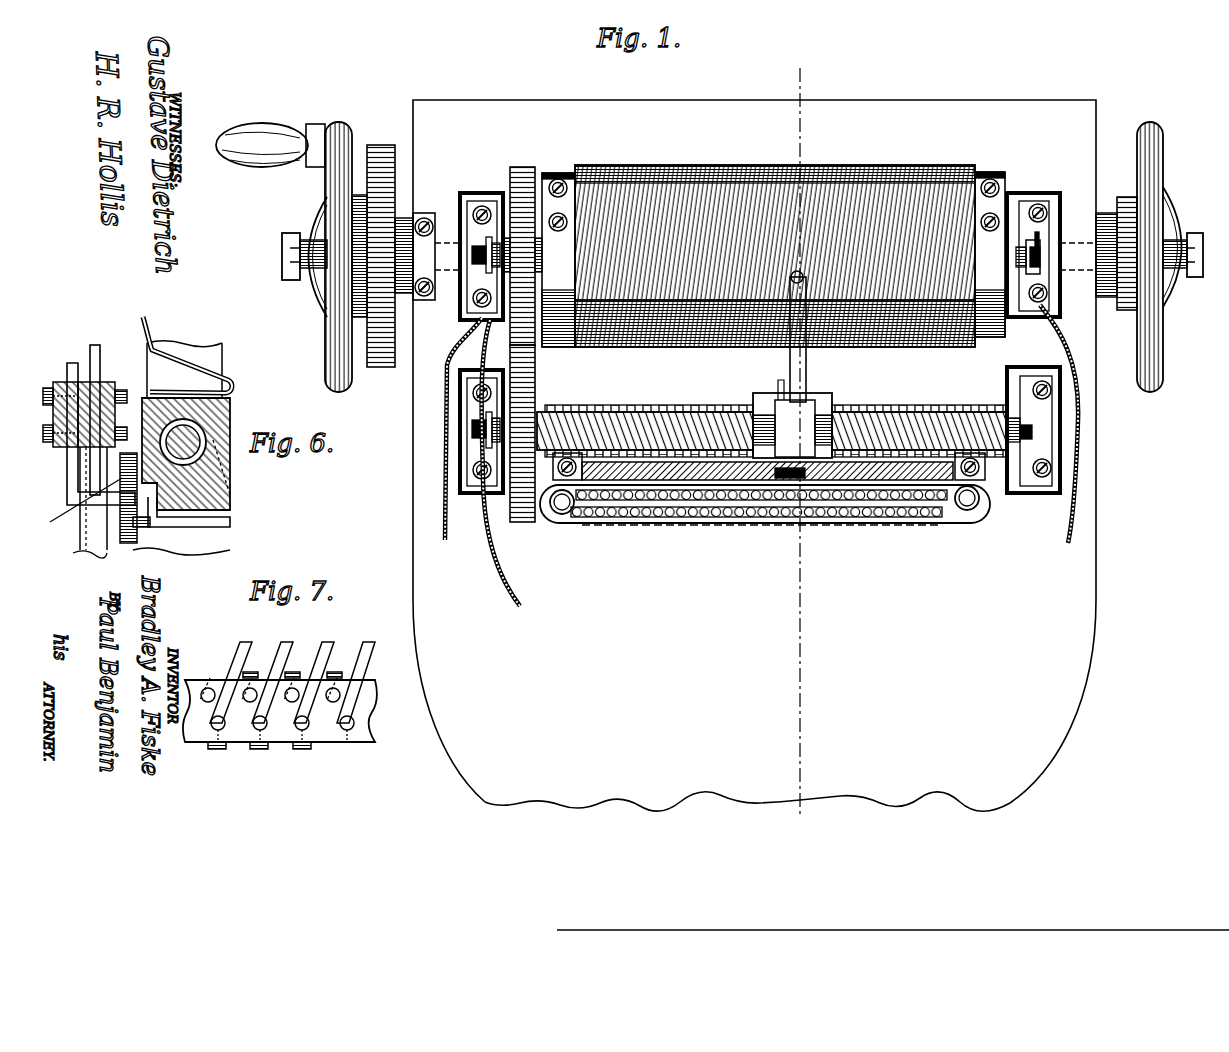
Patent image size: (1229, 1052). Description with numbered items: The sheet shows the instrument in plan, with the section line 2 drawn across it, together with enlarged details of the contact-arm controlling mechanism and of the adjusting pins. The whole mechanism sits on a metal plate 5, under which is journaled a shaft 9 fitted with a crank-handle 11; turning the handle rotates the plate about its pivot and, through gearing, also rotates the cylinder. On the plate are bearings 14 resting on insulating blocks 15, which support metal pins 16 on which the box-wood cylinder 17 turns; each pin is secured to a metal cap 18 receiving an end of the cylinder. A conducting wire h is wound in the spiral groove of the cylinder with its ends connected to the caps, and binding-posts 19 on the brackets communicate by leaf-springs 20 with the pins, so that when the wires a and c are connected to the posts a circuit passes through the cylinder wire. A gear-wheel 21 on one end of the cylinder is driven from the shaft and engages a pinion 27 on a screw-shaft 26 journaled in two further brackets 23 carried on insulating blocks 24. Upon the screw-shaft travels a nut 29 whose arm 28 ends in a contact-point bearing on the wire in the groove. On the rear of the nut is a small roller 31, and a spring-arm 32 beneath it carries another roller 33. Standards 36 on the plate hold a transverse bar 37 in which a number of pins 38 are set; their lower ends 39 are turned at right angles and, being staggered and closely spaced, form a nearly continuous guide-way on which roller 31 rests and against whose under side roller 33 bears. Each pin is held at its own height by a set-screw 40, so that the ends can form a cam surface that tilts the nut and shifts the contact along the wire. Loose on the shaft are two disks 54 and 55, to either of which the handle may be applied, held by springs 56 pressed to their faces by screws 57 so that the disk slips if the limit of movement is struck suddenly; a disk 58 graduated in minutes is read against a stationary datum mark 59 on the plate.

In FIG. 1, the section line 2 is at (803, 429).
In FIG. 1, the metal plate 5 is at (754, 455).
In FIG. 1, the shaft 9 is at (448, 243).
In FIG. 1, the crank-handle 11 is at (288, 130).
In FIG. 1, the bearings 14 is at (466, 192).
In FIG. 1, the insulating blocks 15 is at (488, 200).
In FIG. 1, the metal pins 16 is at (512, 250).
In FIG. 1, the box-wood cylinder 17 is at (775, 244).
In FIG. 1, the metal cap 18 is at (990, 350).
In FIG. 1, the binding-posts 19 is at (470, 290).
In FIG. 1, the leaf-springs 20 is at (1040, 238).
In FIG. 1, the gear-wheel 21 is at (535, 330).
In FIG. 1, the brackets 23 is at (474, 378).
In FIG. 1, the insulating blocks 24 is at (470, 493).
In FIG. 1, the screw-shaft 26 is at (632, 410).
In FIG. 6, the screw-shaft 26 is at (228, 412).
In FIG. 1, the pinion 27 is at (536, 388).
In FIG. 1, the arm 28 is at (806, 362).
In FIG. 1, the nut 29 is at (830, 396).
In FIG. 6, the nut 29 is at (230, 460).
In FIG. 1, the roller 31 is at (756, 524).
In FIG. 6, the roller 31 is at (77, 509).
In FIG. 6, the spring-arm 32 is at (232, 522).
In FIG. 6, the roller 33 is at (178, 527).
In FIG. 1, the standards 36 is at (558, 515).
In FIG. 1, the transverse bar 37 is at (962, 518).
In FIG. 6, the transverse bar 37 is at (108, 382).
In FIG. 7, the transverse bar 37 is at (372, 680).
In FIG. 1, the pins 38 is at (636, 515).
In FIG. 6, the pins 38 is at (72, 363).
In FIG. 7, the pins 38 is at (215, 735).
In FIG. 1, the lower ends 39 is at (767, 464).
In FIG. 6, the lower ends 39 is at (90, 502).
In FIG. 7, the lower ends 39 is at (350, 655).
In FIG. 6, the set-screw 40 is at (77, 402).
In FIG. 7, the set-screw 40 is at (340, 699).
In FIG. 1, the disk 54 is at (339, 393).
In FIG. 1, the disk 55 is at (1150, 393).
In FIG. 1, the springs 56 is at (306, 308).
In FIG. 1, the screws 57 is at (282, 250).
In FIG. 1, the graduated disk 58 is at (380, 145).
In FIG. 1, the datum mark 59 is at (756, 256).
In FIG. 1, the wire a is at (504, 480).
In FIG. 1, the wire c is at (1078, 345).
In FIG. 1, the conducting wire h is at (763, 168).